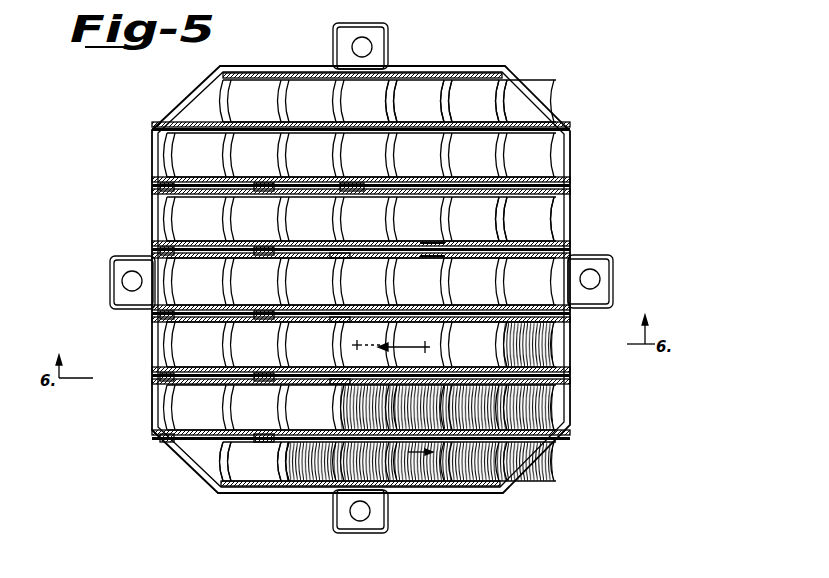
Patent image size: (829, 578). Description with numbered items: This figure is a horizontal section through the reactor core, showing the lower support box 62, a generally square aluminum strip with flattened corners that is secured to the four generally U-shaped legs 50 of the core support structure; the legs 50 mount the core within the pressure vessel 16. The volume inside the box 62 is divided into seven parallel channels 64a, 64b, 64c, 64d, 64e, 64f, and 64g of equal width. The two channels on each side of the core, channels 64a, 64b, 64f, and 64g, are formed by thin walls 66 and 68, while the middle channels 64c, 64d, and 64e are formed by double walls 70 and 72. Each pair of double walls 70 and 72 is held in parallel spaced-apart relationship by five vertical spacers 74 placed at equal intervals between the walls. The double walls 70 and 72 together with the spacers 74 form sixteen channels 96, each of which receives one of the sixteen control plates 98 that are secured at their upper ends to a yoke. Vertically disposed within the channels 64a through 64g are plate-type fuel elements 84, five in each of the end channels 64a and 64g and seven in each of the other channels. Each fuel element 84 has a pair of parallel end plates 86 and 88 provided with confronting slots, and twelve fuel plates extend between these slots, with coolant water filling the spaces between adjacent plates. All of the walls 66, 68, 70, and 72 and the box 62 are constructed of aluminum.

The pressure vessel 16 is at (392, 400).
The legs 50 is at (380, 43).
The lower support box 62 is at (567, 163).
The channel 64a is at (205, 99).
The channel 64b is at (190, 149).
The channel 64c is at (172, 210).
The channel 64d is at (167, 277).
The channel 64e is at (172, 352).
The channel 64f is at (172, 406).
The channel 64g is at (200, 453).
The thin wall 66 is at (214, 124).
The thin wall 68 is at (263, 440).
The double wall 70 is at (160, 182).
The double wall 72 is at (212, 193).
The spacers 74 is at (350, 192).
The fuel elements 84 is at (463, 88).
The end plate 86 is at (430, 204).
The end plate 88 is at (432, 241).
The channels 96 is at (227, 303).
The control plates 98 is at (433, 257).